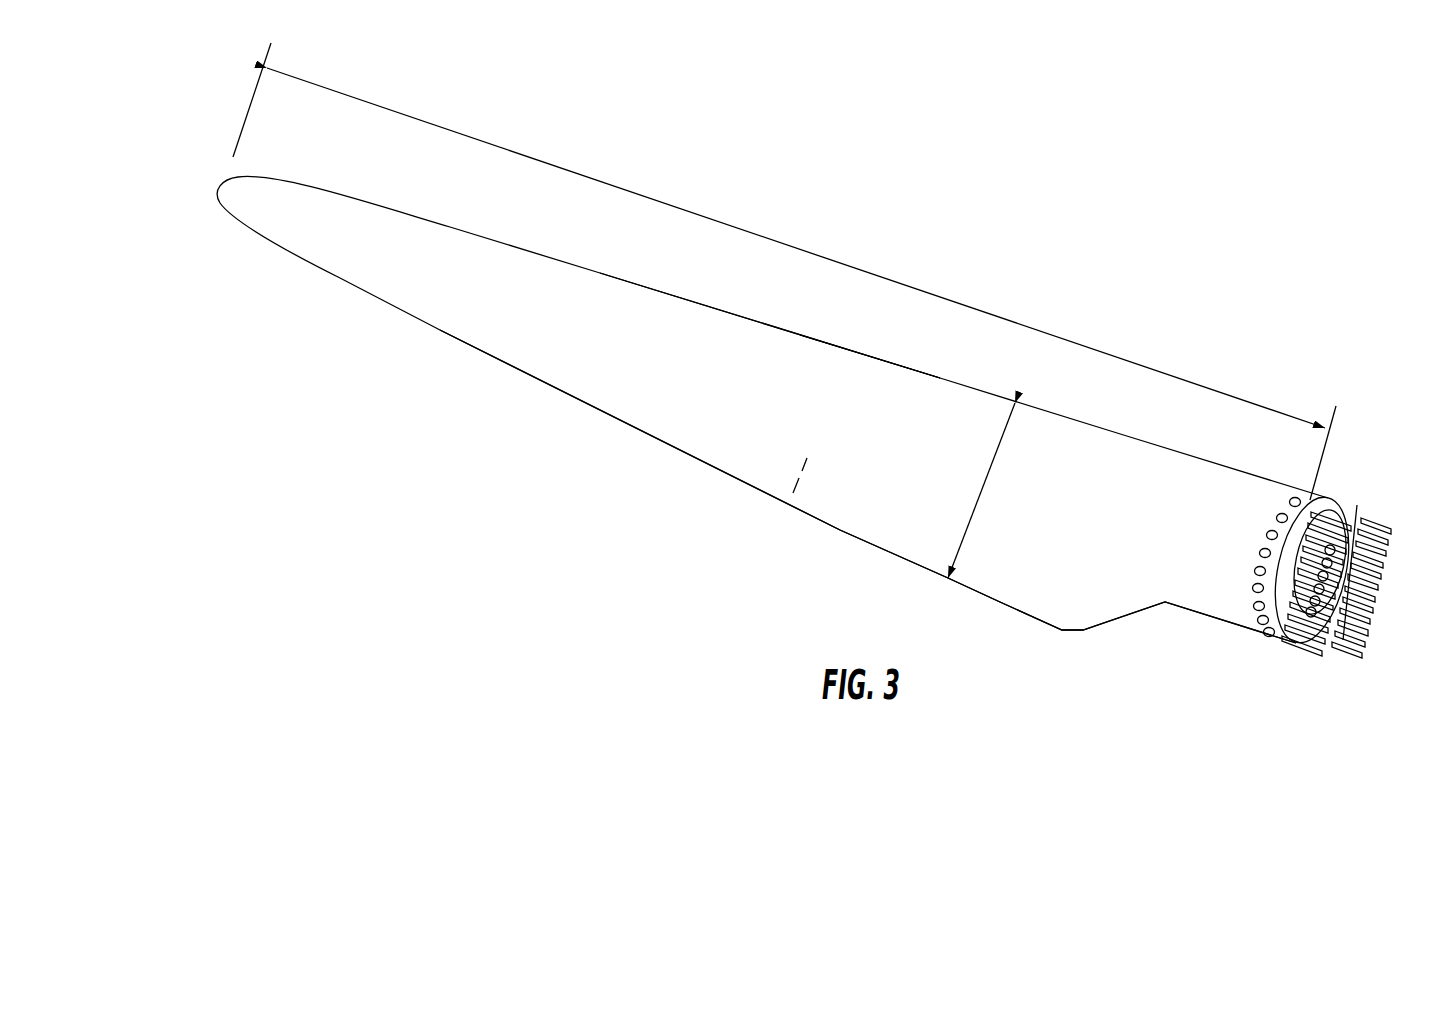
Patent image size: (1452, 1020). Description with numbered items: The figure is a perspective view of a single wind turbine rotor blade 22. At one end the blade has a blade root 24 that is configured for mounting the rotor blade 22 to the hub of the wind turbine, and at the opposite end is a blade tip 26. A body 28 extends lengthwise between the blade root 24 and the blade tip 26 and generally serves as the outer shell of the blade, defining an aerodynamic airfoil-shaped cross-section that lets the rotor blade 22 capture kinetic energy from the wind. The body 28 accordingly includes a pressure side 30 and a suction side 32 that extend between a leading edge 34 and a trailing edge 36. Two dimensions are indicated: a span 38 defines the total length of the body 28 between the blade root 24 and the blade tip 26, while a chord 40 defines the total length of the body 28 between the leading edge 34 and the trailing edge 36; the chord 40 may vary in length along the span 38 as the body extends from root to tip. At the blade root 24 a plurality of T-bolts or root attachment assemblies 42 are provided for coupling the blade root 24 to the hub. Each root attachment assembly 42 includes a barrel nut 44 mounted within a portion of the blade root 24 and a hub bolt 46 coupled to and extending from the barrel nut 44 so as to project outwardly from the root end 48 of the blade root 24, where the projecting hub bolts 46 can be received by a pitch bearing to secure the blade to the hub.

The rotor blade 22 is at (1190, 252).
The blade root 24 is at (1249, 613).
The blade tip 26 is at (222, 188).
The body 28 is at (642, 310).
The pressure side 30 is at (791, 500).
The suction side 32 is at (528, 342).
The leading edge 34 is at (852, 352).
The trailing edge 36 is at (652, 437).
The span 38 is at (838, 263).
The chord 40 is at (980, 500).
The root attachment assembly 42 is at (1231, 566).
The barrel nut 44 is at (1277, 515).
The hub bolt 46 is at (1380, 563).
The root end 48 is at (1302, 634).